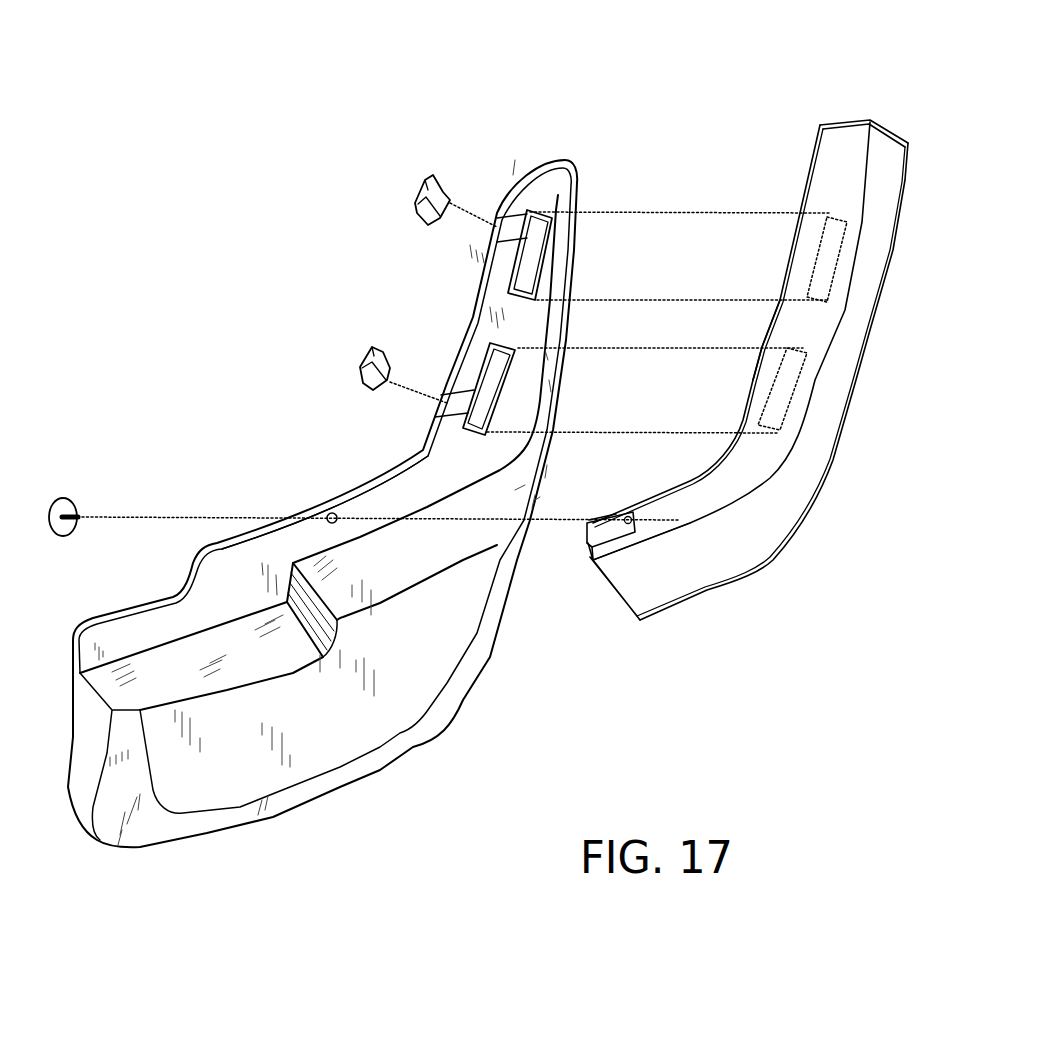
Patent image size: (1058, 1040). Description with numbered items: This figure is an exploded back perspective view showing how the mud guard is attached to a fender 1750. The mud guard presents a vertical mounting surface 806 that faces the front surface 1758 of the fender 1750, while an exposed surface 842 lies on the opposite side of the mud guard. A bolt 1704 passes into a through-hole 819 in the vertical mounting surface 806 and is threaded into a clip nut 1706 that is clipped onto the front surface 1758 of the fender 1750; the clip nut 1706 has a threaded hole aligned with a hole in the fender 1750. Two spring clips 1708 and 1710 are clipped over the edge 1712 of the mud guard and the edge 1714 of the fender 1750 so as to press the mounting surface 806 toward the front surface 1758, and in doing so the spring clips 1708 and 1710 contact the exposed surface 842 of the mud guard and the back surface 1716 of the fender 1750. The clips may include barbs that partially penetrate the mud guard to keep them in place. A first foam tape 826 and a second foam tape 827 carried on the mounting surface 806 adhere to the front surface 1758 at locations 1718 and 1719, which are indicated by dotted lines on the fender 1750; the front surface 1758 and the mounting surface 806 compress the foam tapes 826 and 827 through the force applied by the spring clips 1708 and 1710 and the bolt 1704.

The vertical mounting surface 806 is at (317, 505).
The through-hole 819 is at (330, 512).
The first foam tape 826 is at (541, 237).
The second foam tape 827 is at (495, 368).
The exposed surface 842 is at (470, 330).
The bolt 1704 is at (69, 498).
The clip nut 1706 is at (590, 550).
The spring clip 1708 is at (368, 361).
The spring clip 1710 is at (427, 190).
The edge of mud guard 1712 is at (380, 507).
The edge of fender 1714 is at (765, 328).
The back surface of fender 1716 is at (755, 570).
The location 1718 is at (825, 257).
The location 1719 is at (770, 413).
The fender 1750 is at (721, 349).
The front surface of fender 1758 is at (648, 501).